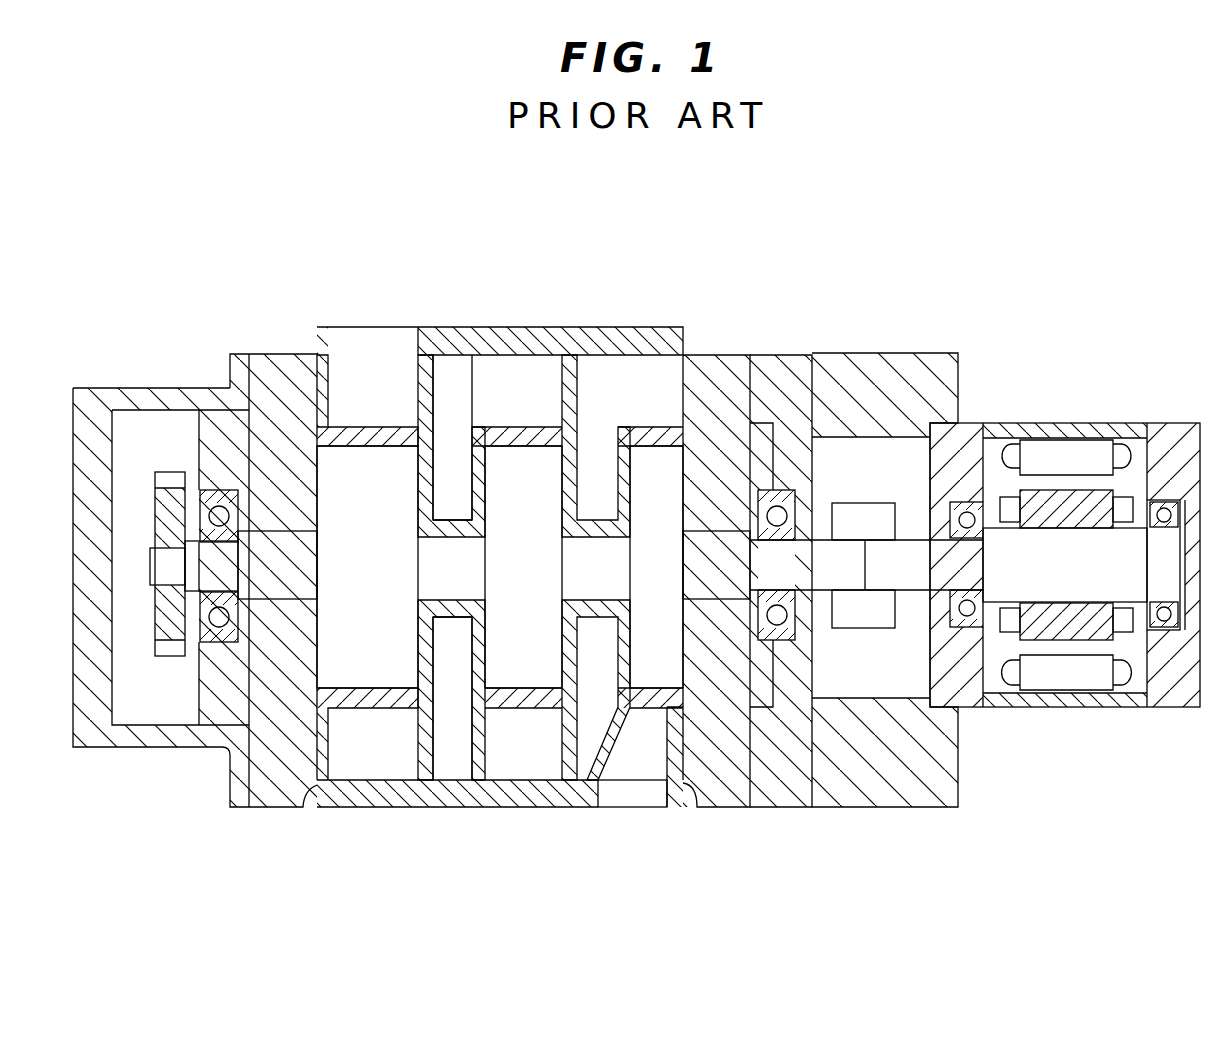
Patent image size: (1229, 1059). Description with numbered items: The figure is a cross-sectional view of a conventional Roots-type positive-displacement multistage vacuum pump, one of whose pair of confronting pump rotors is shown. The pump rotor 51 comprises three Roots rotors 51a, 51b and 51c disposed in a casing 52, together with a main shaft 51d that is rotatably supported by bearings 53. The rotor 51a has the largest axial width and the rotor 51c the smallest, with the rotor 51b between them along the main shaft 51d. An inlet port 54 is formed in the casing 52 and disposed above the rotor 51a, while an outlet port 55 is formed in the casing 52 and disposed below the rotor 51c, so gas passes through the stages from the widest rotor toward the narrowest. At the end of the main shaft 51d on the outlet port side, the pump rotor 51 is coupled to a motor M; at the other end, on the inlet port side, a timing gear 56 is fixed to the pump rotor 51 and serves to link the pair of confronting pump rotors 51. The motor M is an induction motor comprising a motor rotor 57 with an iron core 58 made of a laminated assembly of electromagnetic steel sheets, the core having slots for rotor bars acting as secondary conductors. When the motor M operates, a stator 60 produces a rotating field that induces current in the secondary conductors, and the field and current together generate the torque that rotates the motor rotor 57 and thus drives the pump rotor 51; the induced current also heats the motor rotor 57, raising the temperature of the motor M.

The pump rotor 51 is at (695, 222).
The rotor 51a is at (383, 473).
The rotor 51b is at (507, 473).
The rotor 51c is at (658, 480).
The main shaft 51d is at (452, 550).
The casing 52 is at (555, 423).
The bearings 53 is at (217, 507).
The inlet port 54 is at (365, 338).
The outlet port 55 is at (643, 797).
The timing gear 56 is at (153, 497).
The motor rotor 57 is at (1137, 490).
The iron core 58 is at (1083, 490).
The stator 60 is at (1048, 438).
The motor M is at (1076, 491).